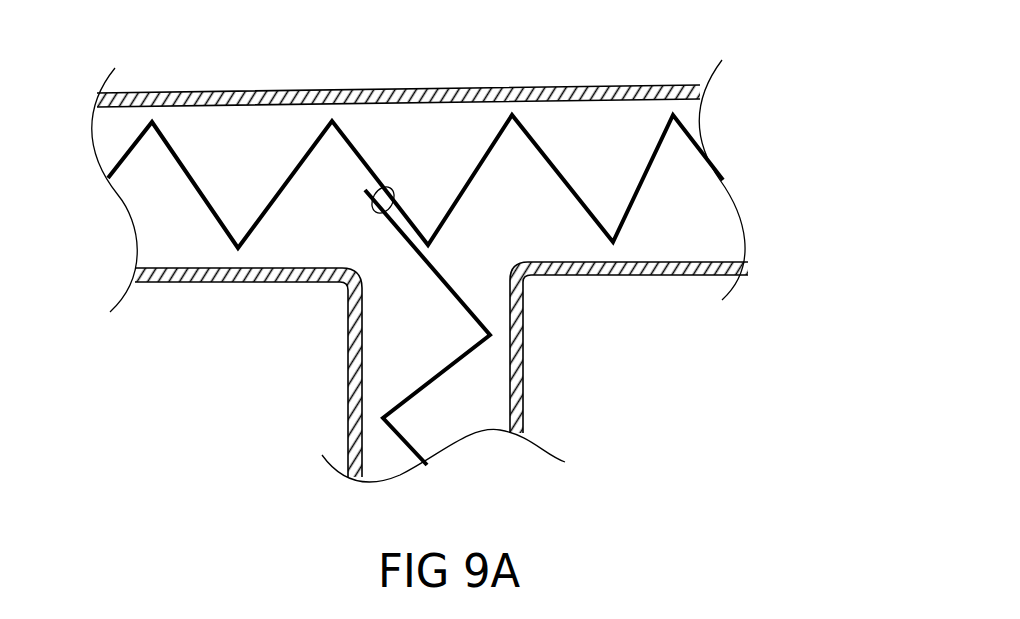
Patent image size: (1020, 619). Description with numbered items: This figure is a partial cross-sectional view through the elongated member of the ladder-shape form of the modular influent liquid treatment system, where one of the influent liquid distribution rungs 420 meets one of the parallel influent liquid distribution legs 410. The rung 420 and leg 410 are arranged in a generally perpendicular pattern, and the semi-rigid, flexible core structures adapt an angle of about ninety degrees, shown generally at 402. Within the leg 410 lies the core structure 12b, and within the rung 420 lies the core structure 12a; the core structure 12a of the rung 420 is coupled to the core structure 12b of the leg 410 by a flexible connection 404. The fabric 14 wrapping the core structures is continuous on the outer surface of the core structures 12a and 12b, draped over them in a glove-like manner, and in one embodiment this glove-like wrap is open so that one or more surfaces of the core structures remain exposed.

The influent liquid distribution leg 410 is at (155, 93).
The core structure of the leg 12b is at (298, 163).
The flexible connection 404 is at (390, 188).
The ninety-degree angle 402 is at (322, 302).
The influent liquid distribution rung 420 is at (348, 394).
The fabric 14 is at (653, 275).
The core structure of the rung 12a is at (438, 377).